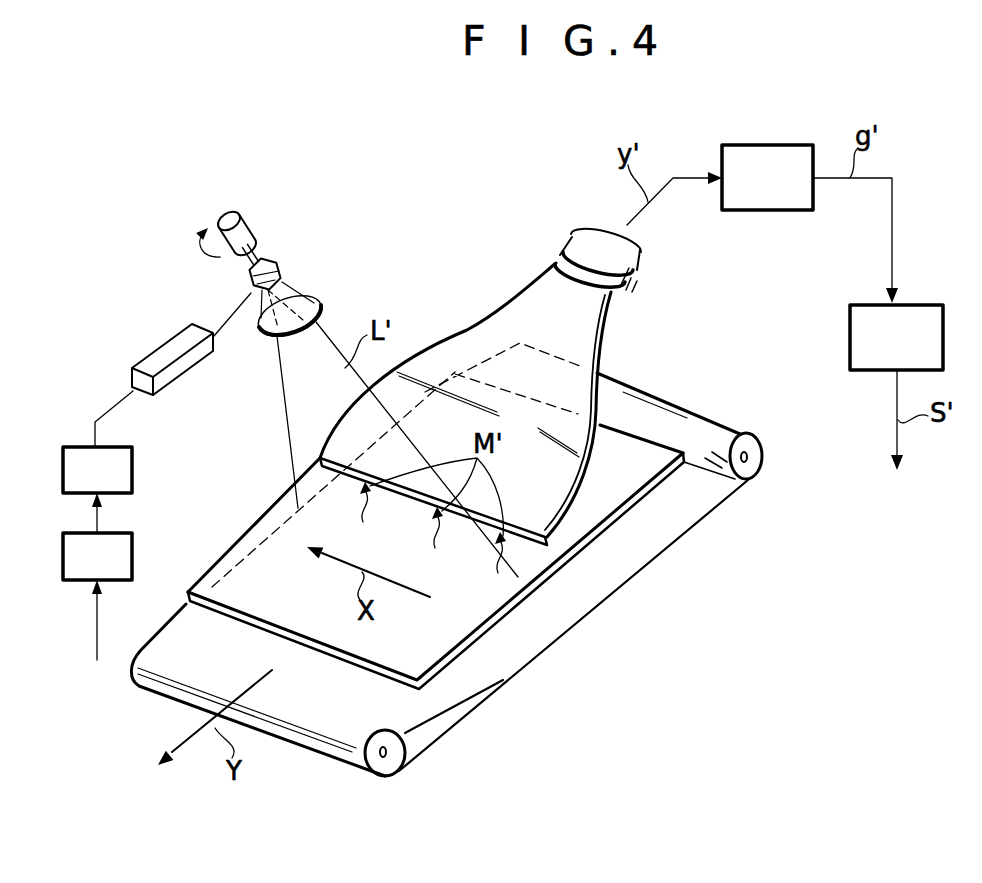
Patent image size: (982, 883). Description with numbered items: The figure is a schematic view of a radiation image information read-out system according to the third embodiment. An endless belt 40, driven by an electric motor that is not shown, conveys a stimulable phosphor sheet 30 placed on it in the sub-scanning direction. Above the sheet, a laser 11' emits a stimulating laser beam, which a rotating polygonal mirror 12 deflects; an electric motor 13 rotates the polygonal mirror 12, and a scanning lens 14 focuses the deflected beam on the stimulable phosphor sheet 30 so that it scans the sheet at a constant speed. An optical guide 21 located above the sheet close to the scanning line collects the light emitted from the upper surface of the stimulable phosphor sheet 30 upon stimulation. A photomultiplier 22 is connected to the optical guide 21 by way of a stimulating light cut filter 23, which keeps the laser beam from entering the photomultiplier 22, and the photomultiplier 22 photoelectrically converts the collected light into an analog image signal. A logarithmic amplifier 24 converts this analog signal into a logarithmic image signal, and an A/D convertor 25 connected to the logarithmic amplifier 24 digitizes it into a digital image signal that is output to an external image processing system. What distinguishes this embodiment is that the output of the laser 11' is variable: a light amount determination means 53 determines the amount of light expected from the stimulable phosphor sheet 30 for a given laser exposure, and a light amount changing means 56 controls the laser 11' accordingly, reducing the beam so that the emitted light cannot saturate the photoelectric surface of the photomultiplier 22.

The laser 11' is at (173, 368).
The rotating polygonal mirror 12 is at (288, 277).
The electric motor 13 is at (258, 226).
The scanning lens 14 is at (315, 298).
The optical guide 21 is at (472, 338).
The photomultiplier 22 is at (577, 217).
The stimulating light cut filter 23 is at (635, 287).
The logarithmic amplifier 24 is at (772, 145).
The A/D convertor 25 is at (927, 305).
The stimulable phosphor sheet 30 is at (254, 535).
The endless belt 40 is at (680, 545).
The light amount determination means 53 is at (132, 565).
The light amount changing means 56 is at (132, 483).